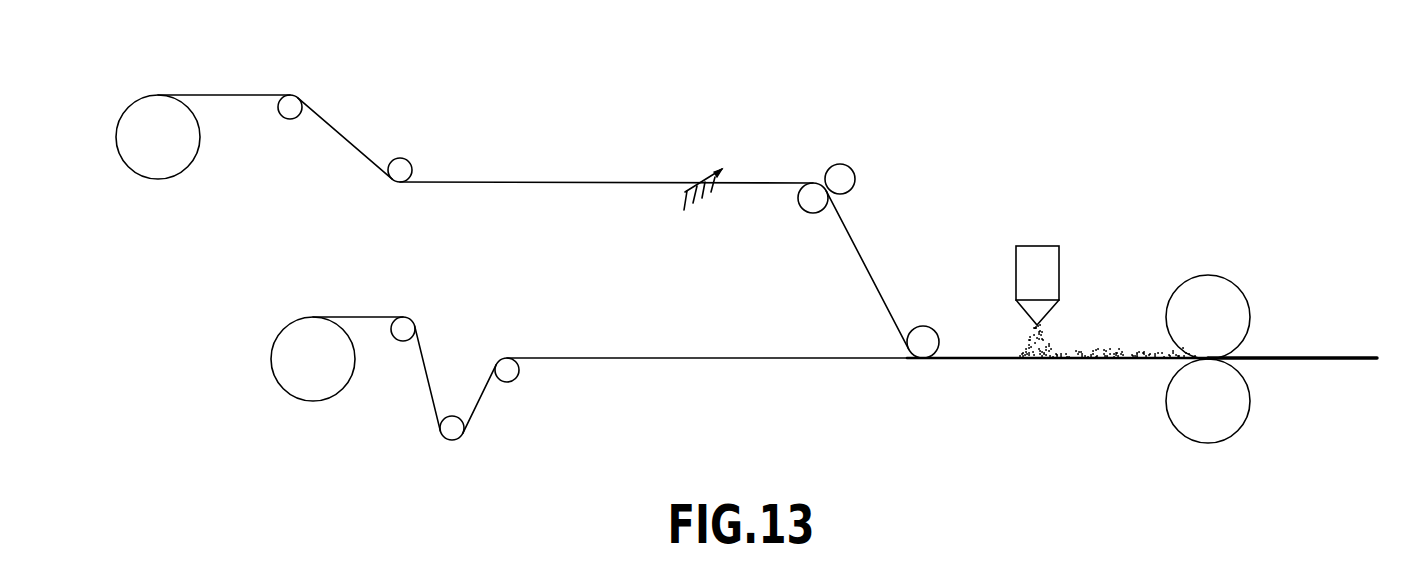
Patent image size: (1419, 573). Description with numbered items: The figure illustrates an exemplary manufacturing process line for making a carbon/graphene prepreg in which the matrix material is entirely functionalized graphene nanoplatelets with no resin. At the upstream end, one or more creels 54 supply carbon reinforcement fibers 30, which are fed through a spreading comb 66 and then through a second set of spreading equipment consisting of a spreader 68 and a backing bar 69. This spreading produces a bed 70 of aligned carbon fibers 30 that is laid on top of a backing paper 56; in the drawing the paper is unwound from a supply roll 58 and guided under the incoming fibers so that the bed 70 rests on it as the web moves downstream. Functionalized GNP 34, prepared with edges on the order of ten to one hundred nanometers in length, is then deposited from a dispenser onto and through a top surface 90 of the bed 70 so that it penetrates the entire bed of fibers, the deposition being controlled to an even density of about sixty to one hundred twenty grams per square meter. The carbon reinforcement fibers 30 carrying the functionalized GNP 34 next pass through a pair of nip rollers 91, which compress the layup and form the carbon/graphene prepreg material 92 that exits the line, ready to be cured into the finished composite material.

The creel 54 is at (135, 127).
The carbon reinforcement fibers 30 is at (252, 97).
The spreading comb 66 is at (717, 170).
The spreader 68 is at (843, 175).
The backing bar 69 is at (807, 202).
The bed of carbon reinforcement fibers 70 is at (867, 258).
The roll of second web material 58 is at (293, 337).
The backing paper 56 is at (430, 385).
The functionalized GNP 34 is at (1022, 347).
The top surface of the bed 90 is at (1128, 348).
The nip rollers 91 is at (1209, 380).
The carbon/graphene prepreg material 92 is at (1352, 357).